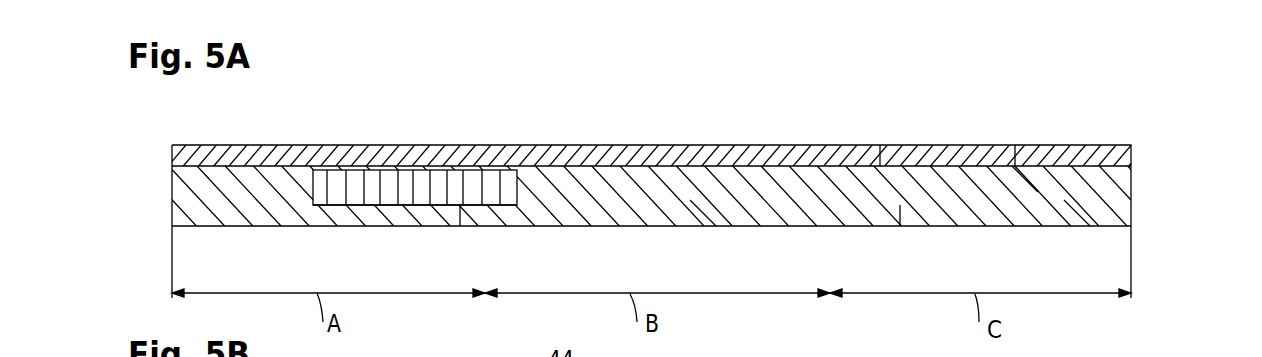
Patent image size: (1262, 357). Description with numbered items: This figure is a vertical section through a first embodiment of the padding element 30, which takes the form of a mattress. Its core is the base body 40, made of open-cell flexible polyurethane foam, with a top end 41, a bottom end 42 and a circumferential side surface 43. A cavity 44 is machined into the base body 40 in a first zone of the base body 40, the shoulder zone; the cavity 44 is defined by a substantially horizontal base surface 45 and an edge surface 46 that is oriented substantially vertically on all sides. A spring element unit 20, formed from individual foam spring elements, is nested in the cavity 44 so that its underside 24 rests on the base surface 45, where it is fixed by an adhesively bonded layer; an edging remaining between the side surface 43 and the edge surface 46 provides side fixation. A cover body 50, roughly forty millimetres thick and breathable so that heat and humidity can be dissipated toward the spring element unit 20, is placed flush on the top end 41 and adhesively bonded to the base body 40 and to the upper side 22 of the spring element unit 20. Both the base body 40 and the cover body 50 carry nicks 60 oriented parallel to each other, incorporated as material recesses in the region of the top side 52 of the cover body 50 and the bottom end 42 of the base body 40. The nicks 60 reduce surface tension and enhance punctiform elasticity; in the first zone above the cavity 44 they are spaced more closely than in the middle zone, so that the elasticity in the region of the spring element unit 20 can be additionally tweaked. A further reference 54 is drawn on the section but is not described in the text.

The padding element 30 is at (1172, 155).
The base body 40 is at (1110, 188).
The cover body 50 is at (1095, 168).
The top side 52 is at (1026, 152).
The top end 41 is at (1005, 165).
The nicks 60 is at (888, 150).
The spring element unit 20 is at (444, 168).
The upper side 22 is at (327, 168).
The base surface 45 is at (380, 168).
The cavity 44 is at (524, 168).
The edge surface 46 is at (297, 205).
The underside 24 is at (482, 207).
The bottom end 42 is at (710, 222).
The layer portion 54 is at (1036, 195).
The side surface 43 is at (1071, 208).